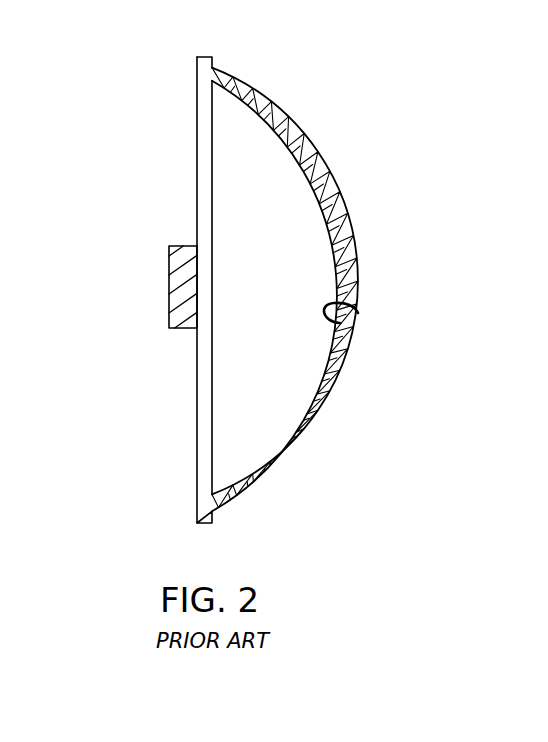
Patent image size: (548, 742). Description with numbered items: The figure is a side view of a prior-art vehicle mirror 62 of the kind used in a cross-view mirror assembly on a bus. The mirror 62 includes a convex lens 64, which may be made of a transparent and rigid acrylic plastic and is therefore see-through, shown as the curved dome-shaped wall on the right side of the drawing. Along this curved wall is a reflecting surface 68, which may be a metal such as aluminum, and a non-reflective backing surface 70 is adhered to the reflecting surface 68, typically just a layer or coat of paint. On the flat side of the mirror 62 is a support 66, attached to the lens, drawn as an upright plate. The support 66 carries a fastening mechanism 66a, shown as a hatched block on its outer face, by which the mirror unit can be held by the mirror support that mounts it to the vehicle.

The mirror 62 is at (153, 98).
The convex lens 64 is at (318, 155).
The support 66 is at (197, 208).
The fastening mechanism 66a is at (169, 298).
The reflecting surface 68 is at (340, 247).
The non-reflective backing surface 70 is at (340, 323).